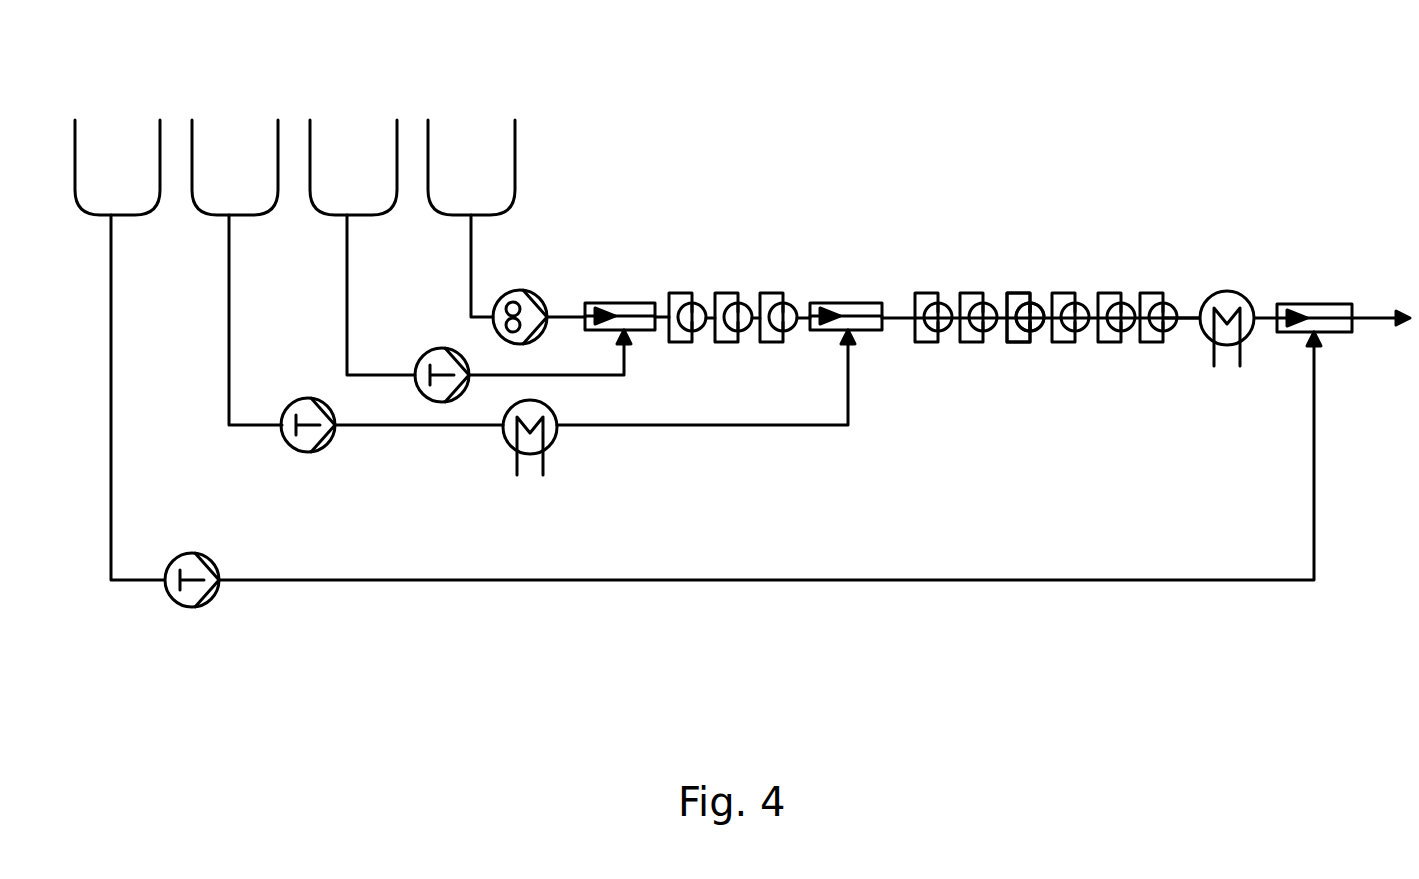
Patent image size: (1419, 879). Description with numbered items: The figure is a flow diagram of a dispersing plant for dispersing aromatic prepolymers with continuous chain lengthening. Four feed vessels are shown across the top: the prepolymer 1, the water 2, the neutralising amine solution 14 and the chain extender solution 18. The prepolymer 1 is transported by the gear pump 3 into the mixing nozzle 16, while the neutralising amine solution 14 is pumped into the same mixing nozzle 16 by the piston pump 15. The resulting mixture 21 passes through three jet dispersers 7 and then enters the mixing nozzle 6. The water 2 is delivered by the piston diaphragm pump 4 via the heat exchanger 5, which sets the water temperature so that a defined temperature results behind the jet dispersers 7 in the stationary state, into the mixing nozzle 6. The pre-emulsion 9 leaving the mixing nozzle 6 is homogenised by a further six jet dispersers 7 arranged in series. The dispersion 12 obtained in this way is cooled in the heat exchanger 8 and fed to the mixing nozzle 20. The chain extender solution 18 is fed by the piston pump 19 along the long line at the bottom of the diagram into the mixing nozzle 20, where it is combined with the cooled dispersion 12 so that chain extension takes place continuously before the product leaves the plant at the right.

The prepolymer 1 is at (465, 125).
The water 2 is at (225, 130).
The gear pump 3 is at (537, 295).
The piston diaphragm pump 4 is at (323, 452).
The heat exchanger 5 is at (555, 447).
The mixing nozzle 6 is at (857, 305).
The jet dispersers 7 is at (729, 300).
The heat exchanger 8 is at (1218, 295).
The pre-emulsion 9 is at (895, 305).
The dispersion 12 is at (1187, 310).
The neutralising amine solution 14 is at (340, 143).
The piston pump 15 is at (435, 352).
The mixing nozzle 16 is at (636, 305).
The chain extender solution 18 is at (102, 127).
The piston pump 19 is at (205, 605).
The mixing nozzle 20 is at (1310, 305).
The mixture 21 is at (664, 305).